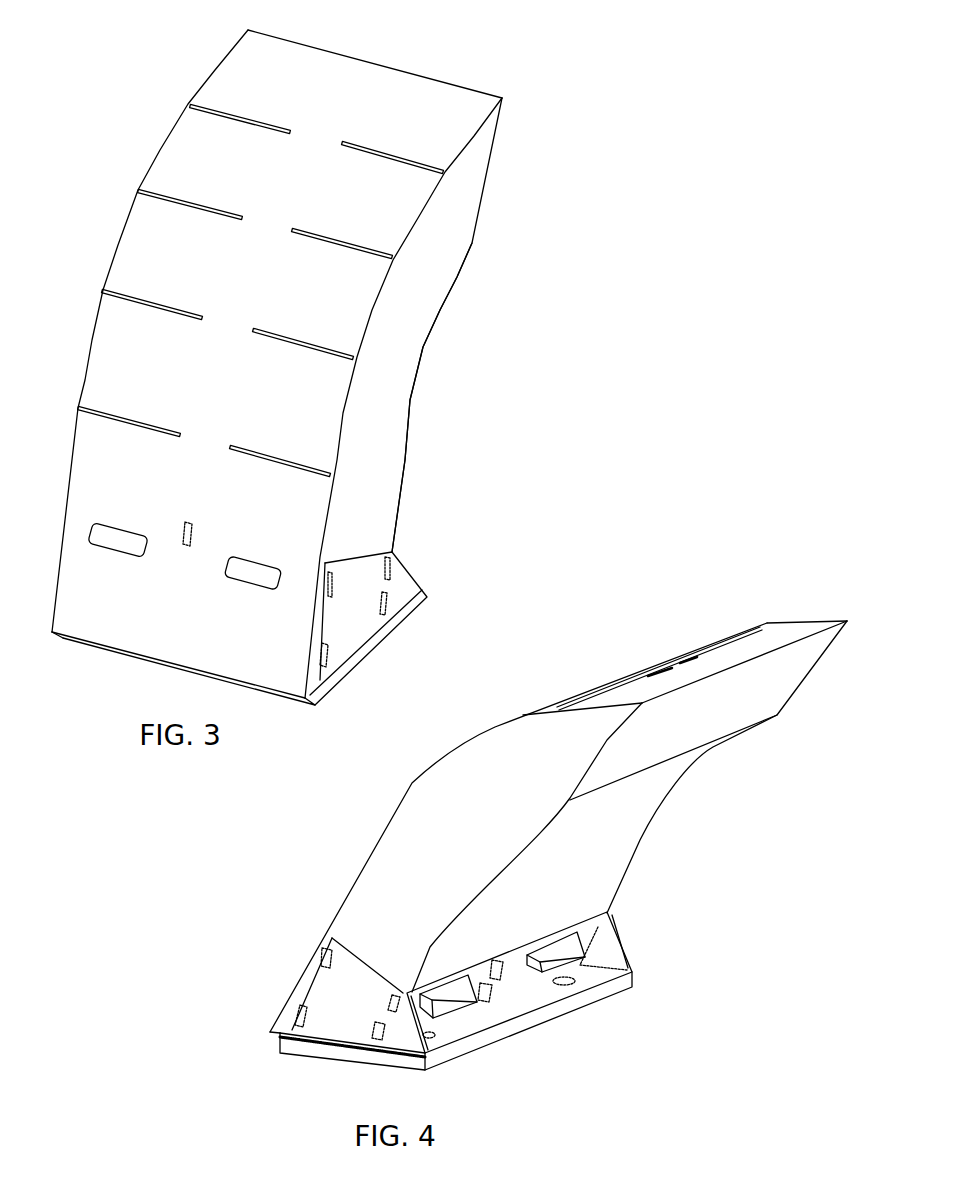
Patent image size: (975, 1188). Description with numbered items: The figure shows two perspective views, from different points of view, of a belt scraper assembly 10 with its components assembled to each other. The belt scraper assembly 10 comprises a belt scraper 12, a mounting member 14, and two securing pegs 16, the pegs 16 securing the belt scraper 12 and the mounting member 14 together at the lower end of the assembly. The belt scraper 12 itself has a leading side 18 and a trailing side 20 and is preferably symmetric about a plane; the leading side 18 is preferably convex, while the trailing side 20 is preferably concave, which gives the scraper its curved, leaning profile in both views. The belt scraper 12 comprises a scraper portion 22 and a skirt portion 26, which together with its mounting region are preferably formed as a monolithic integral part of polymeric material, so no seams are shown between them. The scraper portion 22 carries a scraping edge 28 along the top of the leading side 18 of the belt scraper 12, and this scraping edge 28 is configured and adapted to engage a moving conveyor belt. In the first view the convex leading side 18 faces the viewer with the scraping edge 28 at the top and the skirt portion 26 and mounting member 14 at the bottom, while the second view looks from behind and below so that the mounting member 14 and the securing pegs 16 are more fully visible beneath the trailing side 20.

In FIG. 3, the belt scraper assembly 10 is at (132, 73).
In FIG. 4, the belt scraper assembly 10 is at (678, 598).
In FIG. 3, the belt scraper 12 is at (408, 348).
In FIG. 4, the belt scraper 12 is at (370, 873).
In FIG. 3, the mounting member 14 is at (398, 575).
In FIG. 4, the mounting member 14 is at (332, 1028).
In FIG. 3, the securing pegs 16 is at (113, 538).
In FIG. 4, the securing pegs 16 is at (567, 943).
In FIG. 3, the leading side 18 is at (132, 255).
In FIG. 4, the leading side 18 is at (407, 788).
In FIG. 3, the trailing side 20 is at (408, 400).
In FIG. 4, the trailing side 20 is at (630, 833).
In FIG. 3, the scraper portion 22 is at (442, 273).
In FIG. 4, the scraper portion 22 is at (504, 742).
In FIG. 3, the skirt portion 26 is at (105, 627).
In FIG. 4, the skirt portion 26 is at (300, 978).
In FIG. 3, the scraping edge 28 is at (385, 65).
In FIG. 4, the scraping edge 28 is at (782, 645).